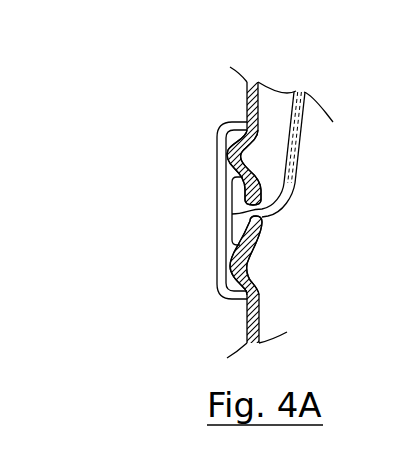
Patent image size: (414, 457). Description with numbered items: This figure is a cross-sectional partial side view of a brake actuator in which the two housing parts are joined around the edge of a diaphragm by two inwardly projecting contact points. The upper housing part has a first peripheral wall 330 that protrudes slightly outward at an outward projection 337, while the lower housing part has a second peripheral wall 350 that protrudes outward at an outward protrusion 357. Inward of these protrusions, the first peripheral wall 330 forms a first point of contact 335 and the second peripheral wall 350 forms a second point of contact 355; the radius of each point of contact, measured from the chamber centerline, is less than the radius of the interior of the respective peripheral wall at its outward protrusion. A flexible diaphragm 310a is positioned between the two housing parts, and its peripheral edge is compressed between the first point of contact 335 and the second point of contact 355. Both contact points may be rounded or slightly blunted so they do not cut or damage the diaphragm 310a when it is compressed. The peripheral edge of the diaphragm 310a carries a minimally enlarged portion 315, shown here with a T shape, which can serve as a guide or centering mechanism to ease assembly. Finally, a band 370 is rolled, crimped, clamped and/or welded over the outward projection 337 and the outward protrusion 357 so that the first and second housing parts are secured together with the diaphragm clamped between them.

The first peripheral wall 330 is at (247, 101).
The outward projection 337 is at (250, 142).
The flexible diaphragm 310a is at (303, 141).
The first point of contact 335 is at (261, 197).
The band 370 is at (217, 198).
The enlarged portion 315 is at (241, 233).
The second peripheral wall 350 is at (246, 333).
The second point of contact 355 is at (259, 229).
The outward protrusion 357 is at (251, 278).